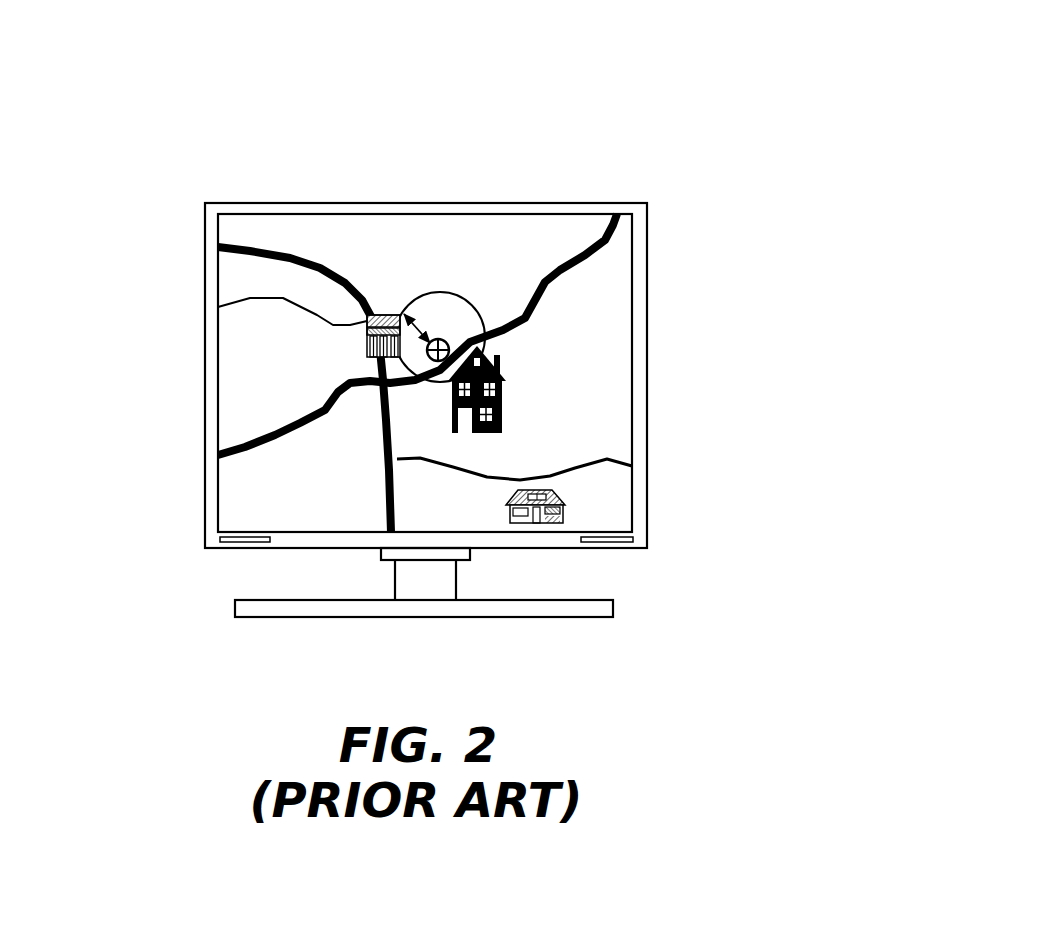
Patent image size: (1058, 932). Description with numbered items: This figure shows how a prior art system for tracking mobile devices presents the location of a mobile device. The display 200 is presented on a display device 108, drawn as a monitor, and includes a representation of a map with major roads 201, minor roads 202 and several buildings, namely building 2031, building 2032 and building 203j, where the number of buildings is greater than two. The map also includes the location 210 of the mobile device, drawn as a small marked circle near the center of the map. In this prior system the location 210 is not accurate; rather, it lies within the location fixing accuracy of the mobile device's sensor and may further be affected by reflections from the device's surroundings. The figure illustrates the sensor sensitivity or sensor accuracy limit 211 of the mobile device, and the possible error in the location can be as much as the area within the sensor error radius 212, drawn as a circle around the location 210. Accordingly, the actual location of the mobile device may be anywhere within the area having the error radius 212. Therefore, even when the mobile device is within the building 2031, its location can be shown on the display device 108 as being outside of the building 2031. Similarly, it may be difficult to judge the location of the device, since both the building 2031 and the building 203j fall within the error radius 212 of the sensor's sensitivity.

The display 200 is at (650, 78).
The display device 108 is at (350, 211).
The major roads 201 is at (335, 267).
The minor roads 202 is at (607, 461).
The building 203j is at (364, 340).
The building 2031 is at (517, 375).
The building 2032 is at (569, 493).
The location 210 is at (452, 338).
The sensor accuracy limit 211 is at (428, 404).
The error radius 212 is at (426, 319).